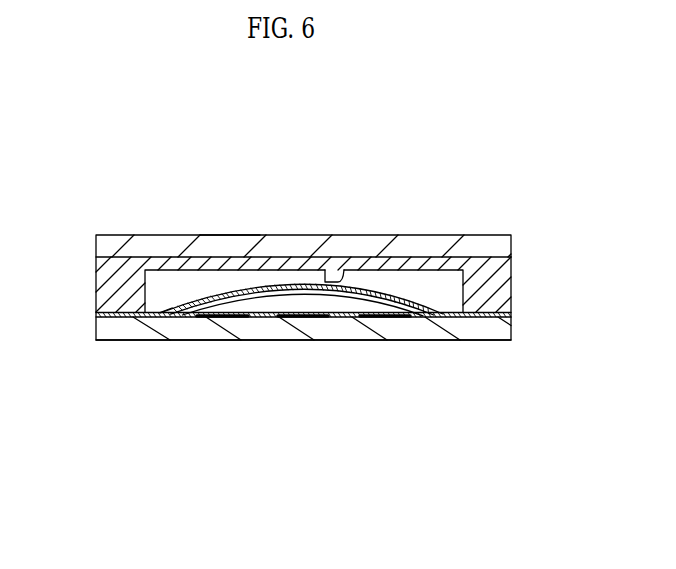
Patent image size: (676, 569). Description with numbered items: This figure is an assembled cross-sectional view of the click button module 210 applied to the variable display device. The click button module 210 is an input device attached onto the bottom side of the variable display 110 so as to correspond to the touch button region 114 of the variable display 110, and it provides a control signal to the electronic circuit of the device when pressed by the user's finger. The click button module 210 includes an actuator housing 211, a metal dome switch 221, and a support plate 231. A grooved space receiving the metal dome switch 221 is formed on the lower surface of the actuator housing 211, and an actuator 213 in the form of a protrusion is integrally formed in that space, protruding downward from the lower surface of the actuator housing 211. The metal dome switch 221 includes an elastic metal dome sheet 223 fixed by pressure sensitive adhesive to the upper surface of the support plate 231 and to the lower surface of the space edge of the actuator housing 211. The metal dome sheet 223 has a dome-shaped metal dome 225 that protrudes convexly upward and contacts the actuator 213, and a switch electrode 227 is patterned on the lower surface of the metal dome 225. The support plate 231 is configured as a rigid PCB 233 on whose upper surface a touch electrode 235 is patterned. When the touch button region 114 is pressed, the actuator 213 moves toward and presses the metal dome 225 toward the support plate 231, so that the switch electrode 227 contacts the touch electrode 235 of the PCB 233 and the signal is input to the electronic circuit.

The variable display 110 is at (291, 233).
The touch button region 114 is at (225, 218).
The click button module 210 is at (529, 282).
The actuator housing 211 is at (104, 283).
The actuator 213 is at (338, 279).
The metal dome switch 221 is at (212, 401).
The metal dome sheet 223 is at (123, 314).
The metal dome 225 is at (180, 308).
The switch electrode 227 is at (215, 318).
The support plate 231 is at (380, 394).
The PCB 233 is at (377, 332).
The touch electrode 235 is at (322, 318).